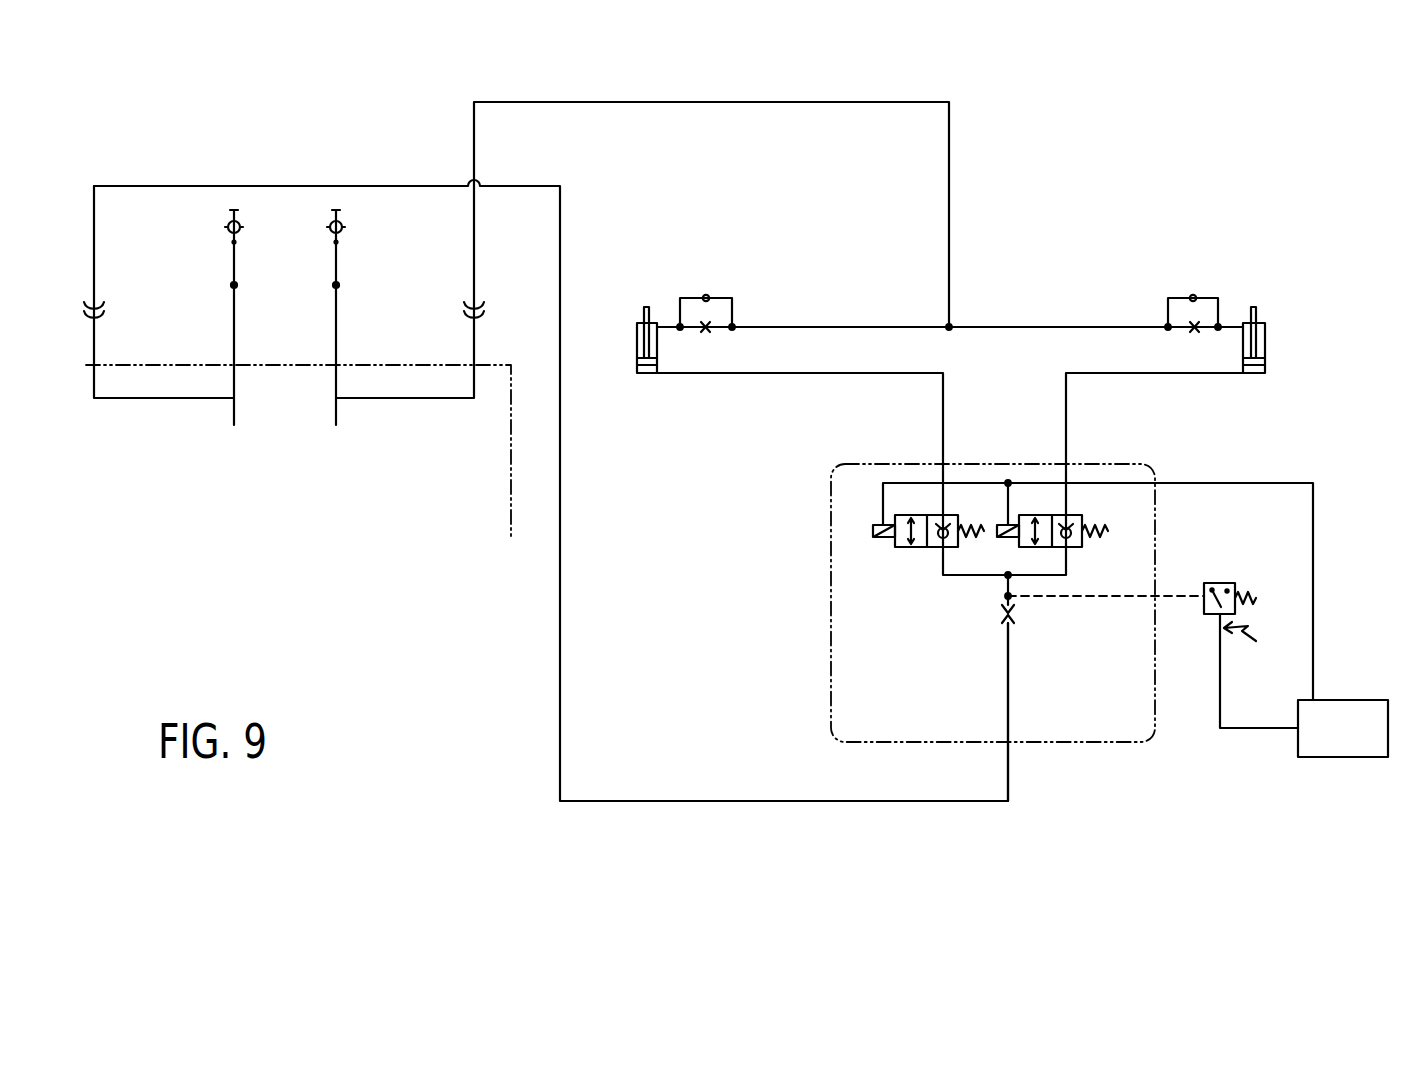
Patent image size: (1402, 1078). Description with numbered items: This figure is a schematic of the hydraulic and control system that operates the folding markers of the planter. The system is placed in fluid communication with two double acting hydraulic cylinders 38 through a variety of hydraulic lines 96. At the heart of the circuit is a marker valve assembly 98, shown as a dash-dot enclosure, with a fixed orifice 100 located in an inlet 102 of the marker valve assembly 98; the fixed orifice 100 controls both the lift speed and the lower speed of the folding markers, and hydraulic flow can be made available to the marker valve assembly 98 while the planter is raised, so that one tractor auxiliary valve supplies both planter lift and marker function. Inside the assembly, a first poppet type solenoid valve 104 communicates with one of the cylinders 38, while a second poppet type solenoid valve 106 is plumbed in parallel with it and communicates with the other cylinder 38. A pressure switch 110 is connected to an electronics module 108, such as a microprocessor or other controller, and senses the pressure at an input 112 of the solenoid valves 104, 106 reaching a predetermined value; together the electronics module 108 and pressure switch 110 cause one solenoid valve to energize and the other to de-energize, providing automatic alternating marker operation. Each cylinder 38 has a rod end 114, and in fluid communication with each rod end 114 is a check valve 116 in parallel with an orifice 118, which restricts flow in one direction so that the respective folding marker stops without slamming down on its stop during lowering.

The double acting hydraulic cylinder 38 is at (636, 368).
The hydraulic lines 96 is at (785, 102).
The marker valve assembly 98 is at (1083, 745).
The fixed orifice 100 is at (1011, 614).
The inlet 102 is at (1007, 668).
The first poppet type solenoid valve 104 is at (914, 549).
The second poppet type solenoid valve 106 is at (1080, 548).
The electronics module 108 is at (1350, 758).
The pressure switch 110 is at (1218, 583).
The input 112 is at (1007, 578).
The rod end 114 is at (635, 336).
The check valve 116 is at (706, 298).
The orifice 118 is at (706, 329).